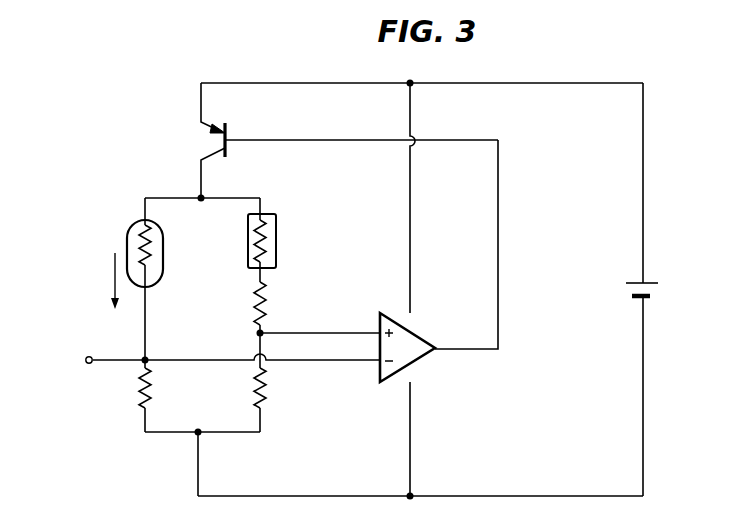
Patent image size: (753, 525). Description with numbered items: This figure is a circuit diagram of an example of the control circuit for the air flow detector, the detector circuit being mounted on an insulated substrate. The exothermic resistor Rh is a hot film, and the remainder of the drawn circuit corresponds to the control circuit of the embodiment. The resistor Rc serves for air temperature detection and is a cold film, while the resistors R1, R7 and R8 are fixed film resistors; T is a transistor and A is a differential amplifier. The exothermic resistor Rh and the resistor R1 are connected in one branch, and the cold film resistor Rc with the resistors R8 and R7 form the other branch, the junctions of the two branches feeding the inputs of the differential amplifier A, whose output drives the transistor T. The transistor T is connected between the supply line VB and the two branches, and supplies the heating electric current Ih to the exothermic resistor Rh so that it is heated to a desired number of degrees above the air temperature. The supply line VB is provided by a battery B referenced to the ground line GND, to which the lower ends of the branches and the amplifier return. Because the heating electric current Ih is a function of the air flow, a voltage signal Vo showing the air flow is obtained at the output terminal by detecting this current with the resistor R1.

The transistor T is at (335, 140).
The exothermic resistor Rh is at (120, 279).
The heating electric current Ih is at (100, 281).
The resistor for air temperature detection Rc is at (278, 240).
The fixed film resistor R8 is at (276, 325).
The fixed film resistor R7 is at (276, 400).
The fixed film resistor R1 is at (127, 396).
The differential amplifier A is at (428, 339).
The battery B is at (650, 294).
The voltage signal Vo is at (73, 359).
The battery voltage line VB is at (658, 178).
The ground line GND is at (669, 402).